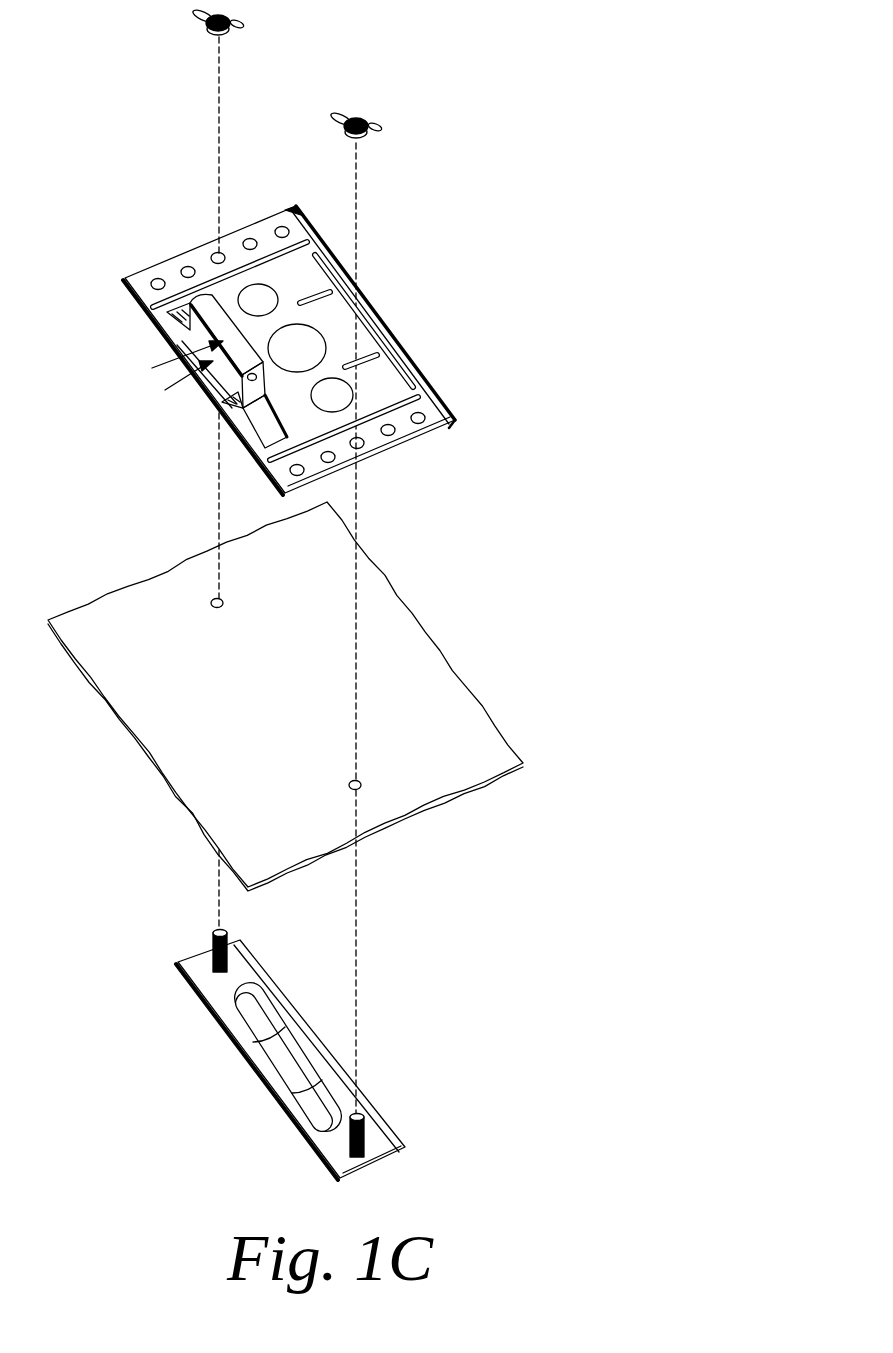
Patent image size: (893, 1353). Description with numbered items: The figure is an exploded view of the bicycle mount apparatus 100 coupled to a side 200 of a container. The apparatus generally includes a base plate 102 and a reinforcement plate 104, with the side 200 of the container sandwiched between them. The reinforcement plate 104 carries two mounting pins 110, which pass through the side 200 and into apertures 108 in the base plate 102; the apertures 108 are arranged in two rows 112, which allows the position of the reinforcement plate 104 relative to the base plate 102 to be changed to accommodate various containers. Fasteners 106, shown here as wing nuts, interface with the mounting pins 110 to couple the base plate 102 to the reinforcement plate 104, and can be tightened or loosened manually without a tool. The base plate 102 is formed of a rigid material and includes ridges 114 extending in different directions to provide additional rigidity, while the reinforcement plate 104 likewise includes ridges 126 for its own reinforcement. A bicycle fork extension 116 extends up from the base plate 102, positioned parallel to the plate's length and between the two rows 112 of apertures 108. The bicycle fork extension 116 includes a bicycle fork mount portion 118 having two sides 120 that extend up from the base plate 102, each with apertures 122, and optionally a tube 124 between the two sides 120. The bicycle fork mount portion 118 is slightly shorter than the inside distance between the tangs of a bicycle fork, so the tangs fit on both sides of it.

The bicycle mount apparatus 100 is at (508, 200).
The base plate 102 is at (140, 272).
The reinforcement plate 104 is at (192, 1000).
The fasteners 106 is at (200, 33).
The apertures 108 is at (158, 279).
The mounting pins 110 is at (228, 934).
The rows of apertures 112 is at (298, 203).
The ridges 114 is at (320, 248).
The bicycle fork extension 116 is at (165, 390).
The bicycle fork mount portion 118 is at (152, 368).
The sides 120 is at (185, 318).
The apertures 122 is at (257, 381).
The tube 124 is at (233, 380).
The ridges 126 is at (270, 1005).
The side of a container 200 is at (440, 635).